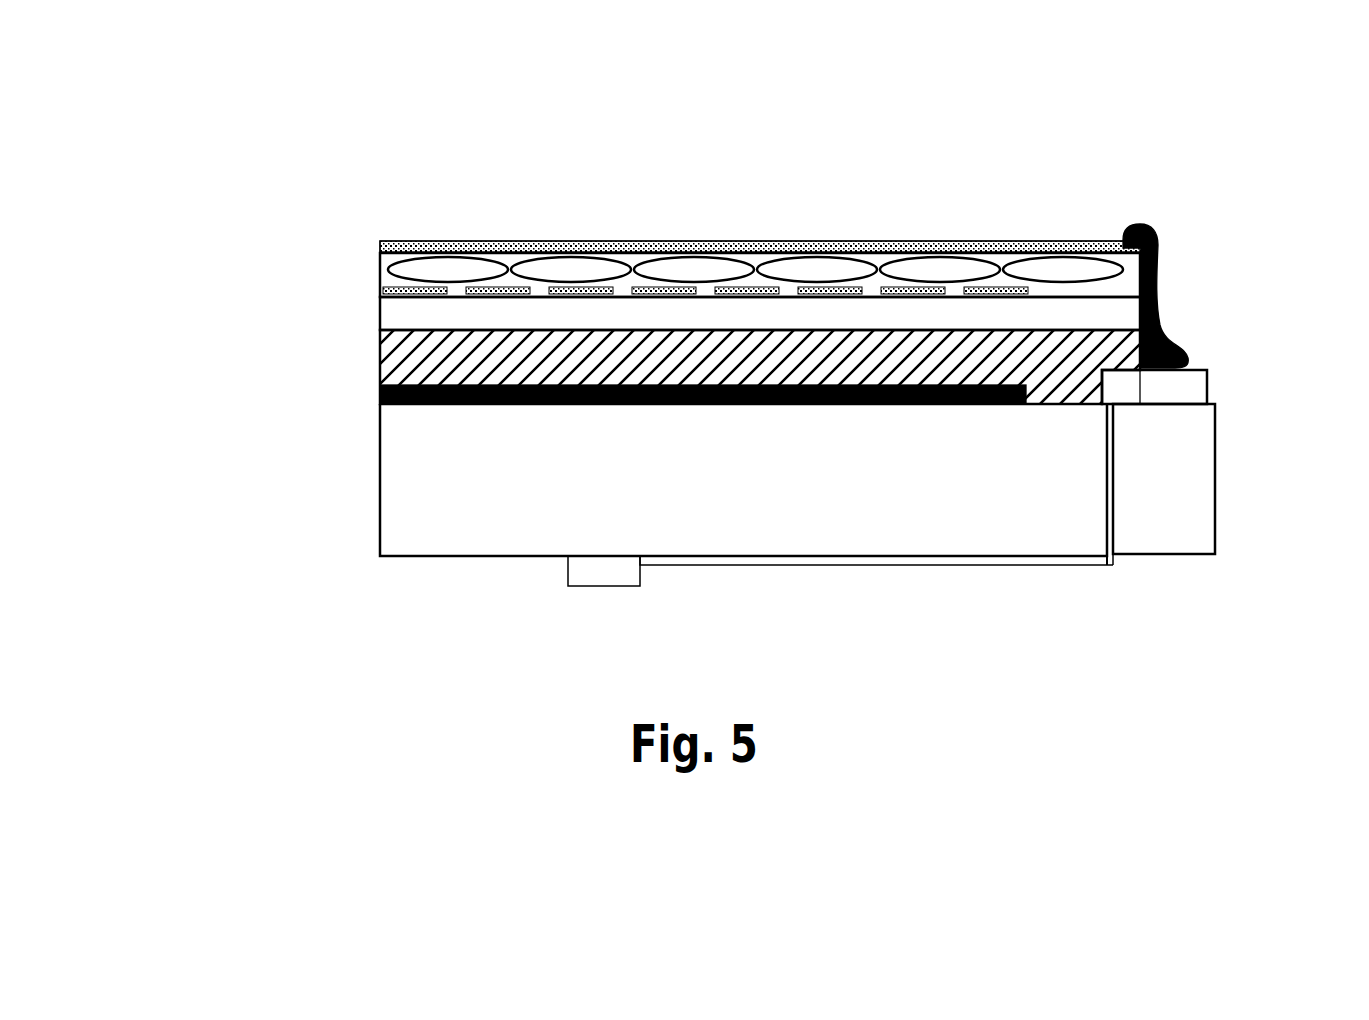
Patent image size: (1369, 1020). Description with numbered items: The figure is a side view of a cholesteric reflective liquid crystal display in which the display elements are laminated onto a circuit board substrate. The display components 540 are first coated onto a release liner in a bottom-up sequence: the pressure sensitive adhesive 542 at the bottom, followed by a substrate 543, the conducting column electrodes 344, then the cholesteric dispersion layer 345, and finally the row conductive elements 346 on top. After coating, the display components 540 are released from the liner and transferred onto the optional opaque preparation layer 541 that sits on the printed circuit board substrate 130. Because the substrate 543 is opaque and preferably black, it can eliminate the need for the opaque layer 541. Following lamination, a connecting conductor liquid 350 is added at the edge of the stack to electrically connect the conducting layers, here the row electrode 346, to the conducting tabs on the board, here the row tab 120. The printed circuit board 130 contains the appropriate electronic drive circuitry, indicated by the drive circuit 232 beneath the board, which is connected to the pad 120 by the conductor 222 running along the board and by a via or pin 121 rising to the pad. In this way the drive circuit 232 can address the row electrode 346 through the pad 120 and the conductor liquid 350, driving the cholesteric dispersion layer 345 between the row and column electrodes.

The display components 540 is at (222, 117).
The row conductive elements 346 is at (414, 247).
The cholesteric dispersion layer 345 is at (378, 272).
The conducting column electrodes 344 is at (378, 297).
The substrate 543 is at (430, 313).
The pressure sensitive adhesive 542 is at (403, 365).
The opaque preparation layer 541 is at (383, 395).
The connecting conductor liquid 350 is at (1163, 243).
The row tab 120 is at (1207, 377).
The printed circuit board substrate 130 is at (1163, 478).
The via or pin 121 is at (1112, 478).
The conductor 222 is at (867, 558).
The drive circuit 232 is at (598, 570).